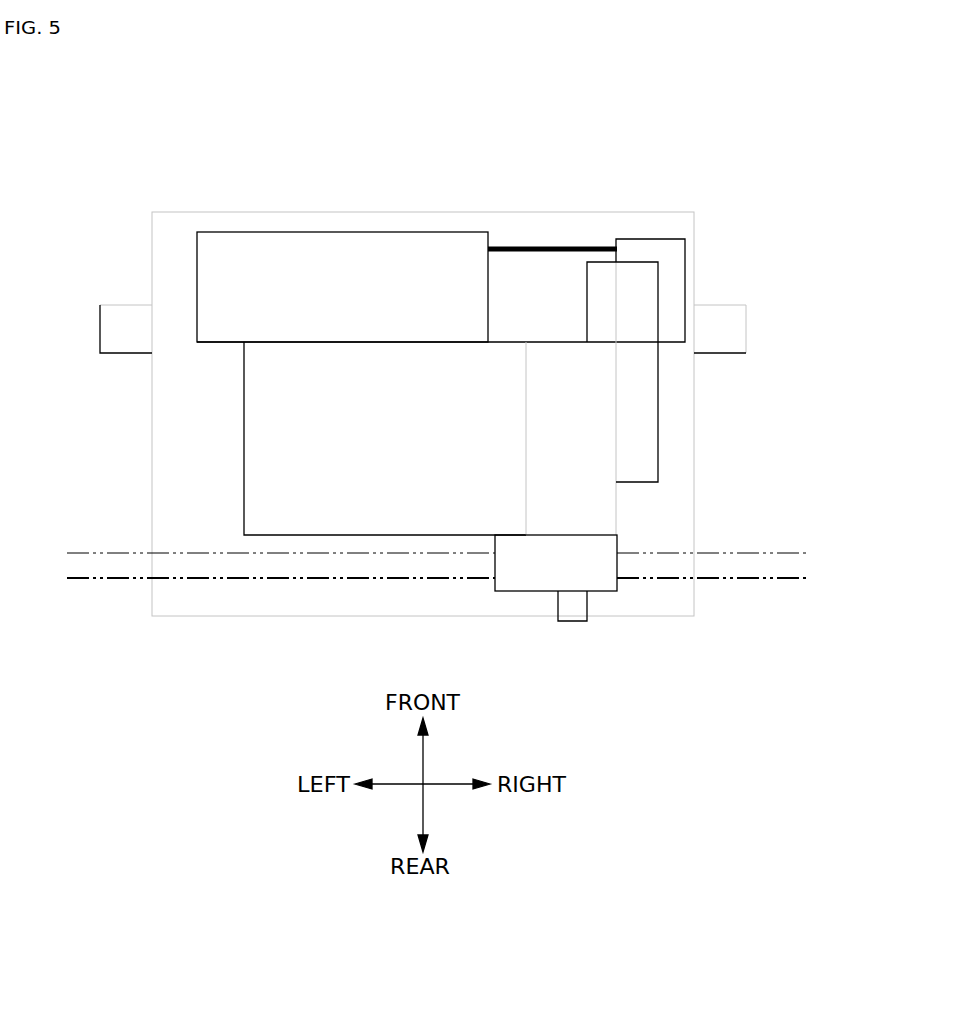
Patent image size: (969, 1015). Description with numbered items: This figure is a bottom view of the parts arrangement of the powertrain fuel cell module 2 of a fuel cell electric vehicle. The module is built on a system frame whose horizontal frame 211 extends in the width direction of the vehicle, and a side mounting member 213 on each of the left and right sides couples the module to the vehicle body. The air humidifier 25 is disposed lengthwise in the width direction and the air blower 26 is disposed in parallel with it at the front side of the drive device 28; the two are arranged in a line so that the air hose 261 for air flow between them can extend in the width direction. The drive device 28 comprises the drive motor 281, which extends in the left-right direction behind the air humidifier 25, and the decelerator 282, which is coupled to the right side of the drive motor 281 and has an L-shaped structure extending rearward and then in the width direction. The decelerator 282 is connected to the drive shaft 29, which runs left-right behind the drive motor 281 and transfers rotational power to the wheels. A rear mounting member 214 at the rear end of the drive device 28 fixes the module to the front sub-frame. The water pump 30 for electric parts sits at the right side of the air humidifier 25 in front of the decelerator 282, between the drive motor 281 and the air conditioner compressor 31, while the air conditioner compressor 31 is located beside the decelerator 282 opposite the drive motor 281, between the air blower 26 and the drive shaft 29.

The powertrain fuel cell module 2 is at (713, 200).
The horizontal frame 211 is at (694, 411).
The side mounting member 213 is at (110, 331).
The rear mounting member 214 is at (573, 623).
The air humidifier 25 is at (334, 232).
The air blower 26 is at (685, 272).
The air hose 261 is at (546, 247).
The drive device 28 is at (430, 517).
The drive motor 281 is at (325, 535).
The decelerator 282 is at (494, 567).
The drive shaft 29 is at (752, 585).
The water pump for electric parts 30 is at (637, 262).
The air conditioner compressor 31 is at (658, 462).